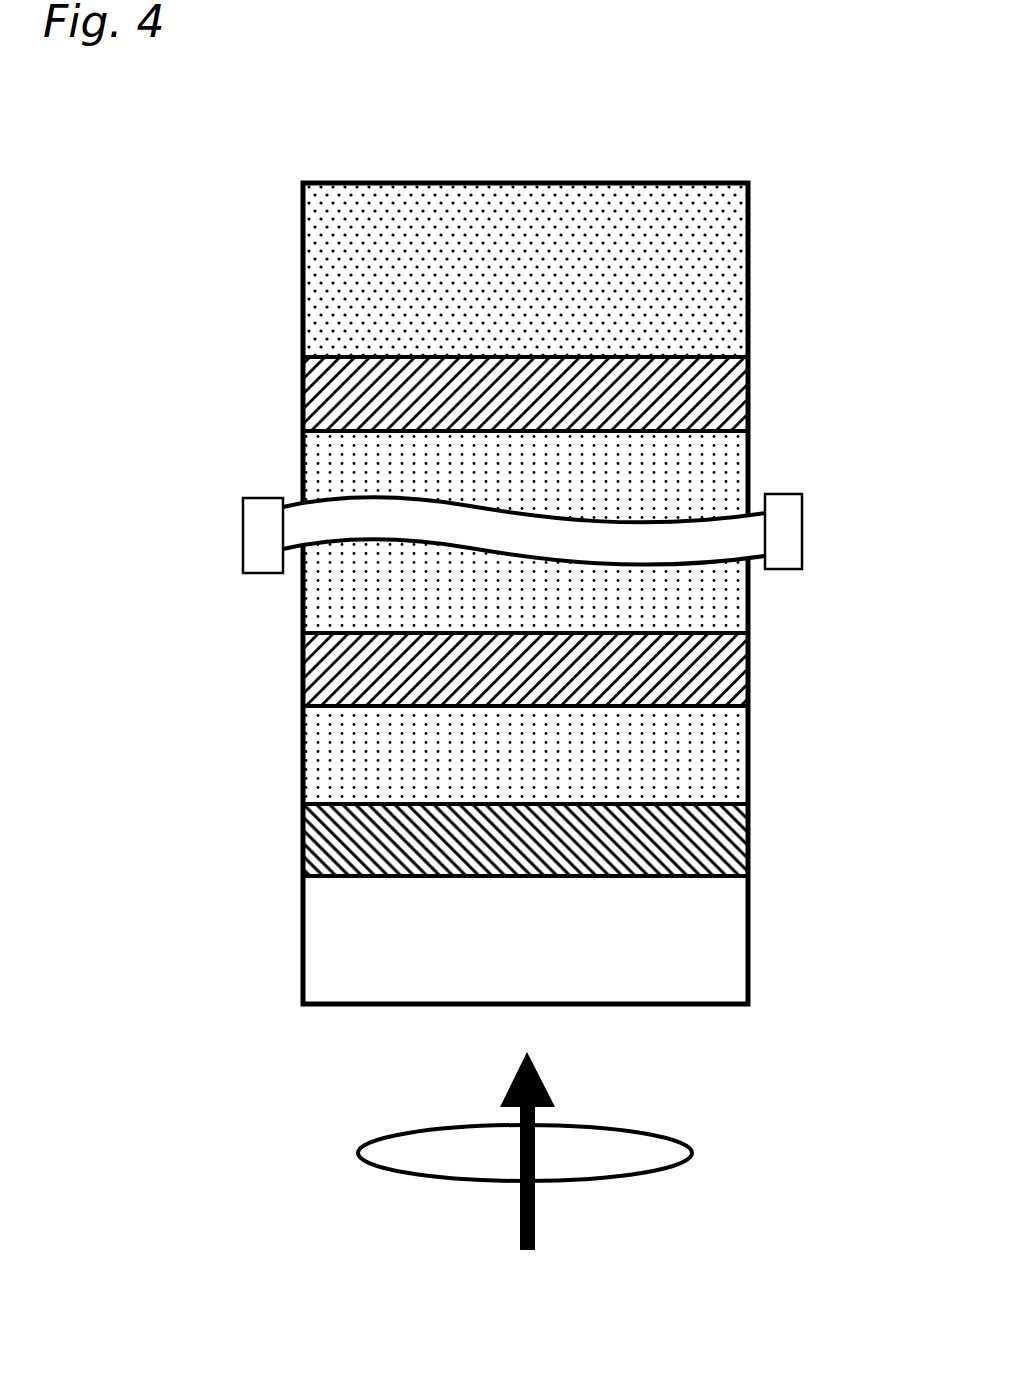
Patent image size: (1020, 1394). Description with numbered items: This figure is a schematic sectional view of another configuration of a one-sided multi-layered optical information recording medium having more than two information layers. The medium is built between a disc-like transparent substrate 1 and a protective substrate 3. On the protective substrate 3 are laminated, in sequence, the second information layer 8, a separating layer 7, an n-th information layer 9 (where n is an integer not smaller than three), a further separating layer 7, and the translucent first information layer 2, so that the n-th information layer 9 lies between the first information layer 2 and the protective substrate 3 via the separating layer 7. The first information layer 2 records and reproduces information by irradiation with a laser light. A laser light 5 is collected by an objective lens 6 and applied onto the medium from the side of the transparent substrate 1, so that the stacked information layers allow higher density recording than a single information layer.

The transparent substrate 1 is at (748, 930).
The first information layer 2 is at (748, 837).
The protective substrate 3 is at (748, 273).
The laser light 5 is at (535, 1213).
The objective lens 6 is at (692, 1149).
The separating layer 7 is at (748, 464).
The second information layer 8 is at (748, 665).
The n-th information layer 9 is at (748, 391).